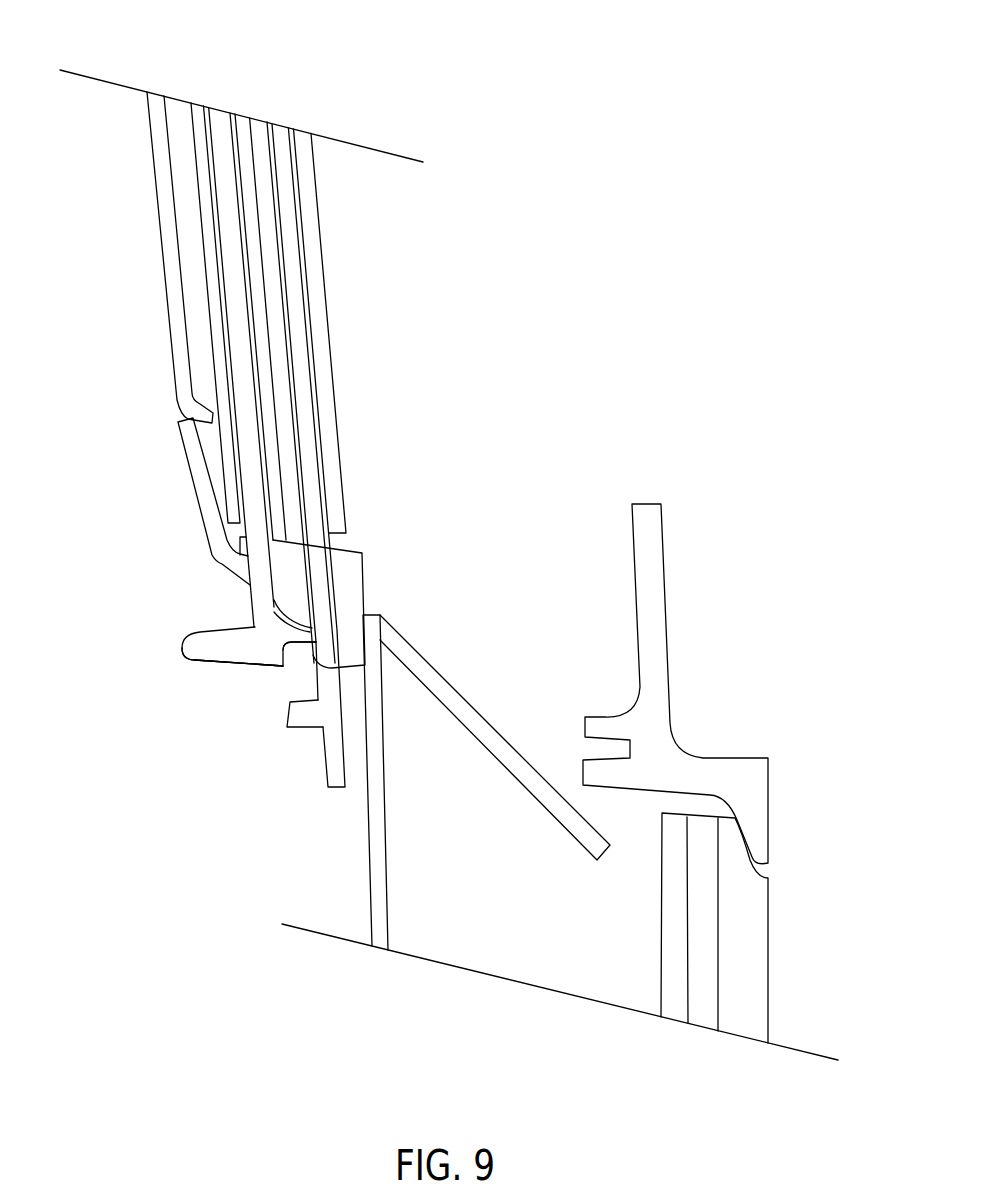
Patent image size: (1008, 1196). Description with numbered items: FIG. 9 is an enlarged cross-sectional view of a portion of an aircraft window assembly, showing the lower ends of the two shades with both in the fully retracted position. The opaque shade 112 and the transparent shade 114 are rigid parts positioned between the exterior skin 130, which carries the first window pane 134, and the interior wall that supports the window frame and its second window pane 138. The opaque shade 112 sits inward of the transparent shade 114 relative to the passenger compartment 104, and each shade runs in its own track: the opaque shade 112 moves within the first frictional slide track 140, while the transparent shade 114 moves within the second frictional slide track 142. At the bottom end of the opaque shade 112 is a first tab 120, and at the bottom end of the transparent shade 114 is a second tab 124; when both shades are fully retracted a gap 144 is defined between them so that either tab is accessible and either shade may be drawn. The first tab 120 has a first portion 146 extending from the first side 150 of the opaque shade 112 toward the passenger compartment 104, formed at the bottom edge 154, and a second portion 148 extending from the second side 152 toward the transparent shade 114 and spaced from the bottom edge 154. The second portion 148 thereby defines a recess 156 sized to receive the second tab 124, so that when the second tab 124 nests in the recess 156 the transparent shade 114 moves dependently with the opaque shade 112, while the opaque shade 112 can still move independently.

The passenger compartment 104 is at (129, 786).
The opaque shade 112 is at (218, 120).
The transparent shade 114 is at (277, 128).
The first tab 120 is at (155, 673).
The second tab 124 is at (303, 730).
The exterior skin 130 is at (665, 587).
The first window pane 134 is at (770, 927).
The second window pane 138 is at (387, 850).
The first frictional slide track 140 is at (191, 113).
The second frictional slide track 142 is at (325, 283).
The gap 144 is at (302, 686).
The first portion 146 is at (190, 640).
The second portion 148 is at (325, 670).
The first side 150 is at (250, 603).
The second side 152 is at (272, 574).
The bottom edge 154 is at (205, 662).
The recess 156 is at (296, 655).